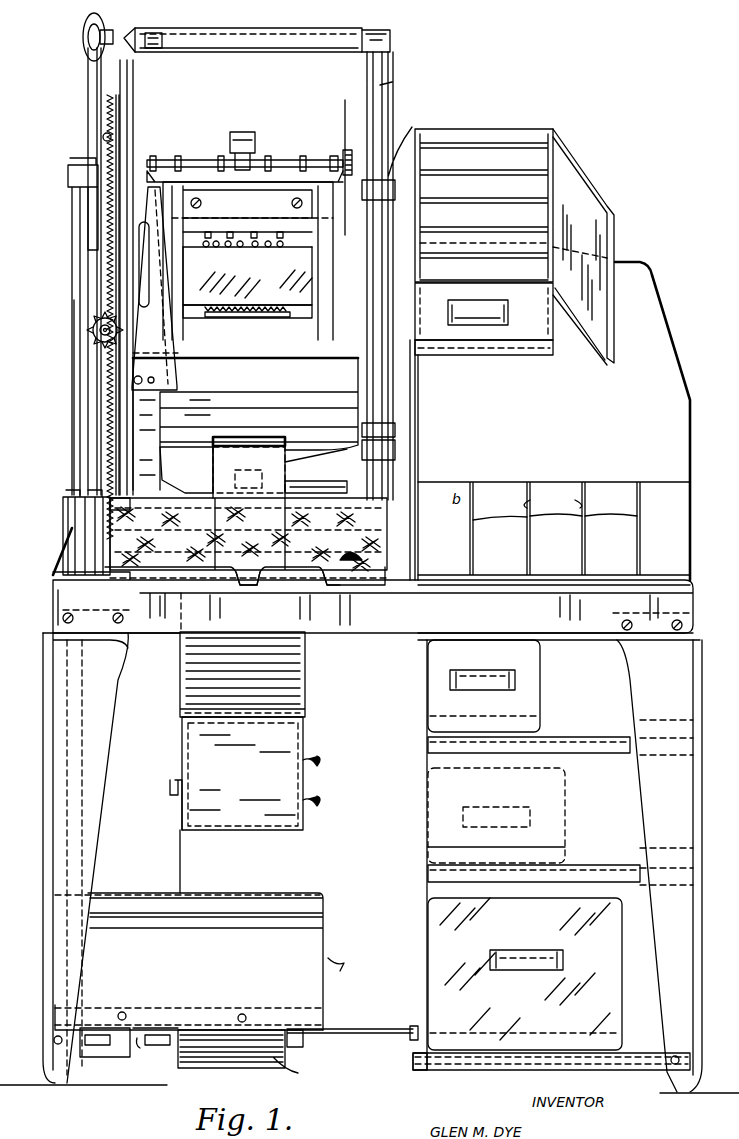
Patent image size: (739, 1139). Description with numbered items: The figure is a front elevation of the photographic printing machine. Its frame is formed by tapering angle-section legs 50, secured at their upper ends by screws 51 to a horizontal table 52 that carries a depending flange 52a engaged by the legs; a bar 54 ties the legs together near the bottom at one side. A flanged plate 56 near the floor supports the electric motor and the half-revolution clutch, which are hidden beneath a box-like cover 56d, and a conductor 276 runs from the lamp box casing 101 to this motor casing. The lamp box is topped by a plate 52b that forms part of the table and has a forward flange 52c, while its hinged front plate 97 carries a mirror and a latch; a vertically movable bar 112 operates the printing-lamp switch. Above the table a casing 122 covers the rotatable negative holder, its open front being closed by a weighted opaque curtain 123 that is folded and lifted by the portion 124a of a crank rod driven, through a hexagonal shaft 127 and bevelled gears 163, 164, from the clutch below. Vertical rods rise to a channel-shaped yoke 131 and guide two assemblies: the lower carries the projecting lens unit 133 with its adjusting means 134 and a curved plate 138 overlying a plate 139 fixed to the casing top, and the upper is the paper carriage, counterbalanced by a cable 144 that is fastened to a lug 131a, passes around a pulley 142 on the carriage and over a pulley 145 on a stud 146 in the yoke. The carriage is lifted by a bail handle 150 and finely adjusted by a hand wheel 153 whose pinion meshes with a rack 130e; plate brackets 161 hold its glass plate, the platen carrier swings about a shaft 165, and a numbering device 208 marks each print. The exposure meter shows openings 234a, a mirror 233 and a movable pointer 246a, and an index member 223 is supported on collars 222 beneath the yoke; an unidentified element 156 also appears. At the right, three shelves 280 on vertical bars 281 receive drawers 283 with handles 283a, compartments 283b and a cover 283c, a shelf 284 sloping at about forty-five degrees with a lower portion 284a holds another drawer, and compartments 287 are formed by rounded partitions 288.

The yoke 131 is at (251, 29).
The lug 131a is at (108, 50).
The pulley 145 is at (101, 27).
The stud 146 is at (84, 43).
The cord or cable 144 is at (96, 86).
The pulley 142 is at (97, 228).
The rack 130e is at (109, 432).
The bevelled gear 164 is at (103, 137).
The bevelled gear 163 is at (72, 168).
The shaft 127 is at (82, 373).
The numbering device 208 is at (249, 133).
The shaft 165 is at (263, 160).
The plate brackets 161 is at (201, 203).
The holes or openings 234a is at (229, 247).
The window 156 is at (232, 290).
The mirror 233 is at (205, 309).
The movable pointer 246a is at (238, 318).
The bail handle 150 is at (140, 263).
The hand wheel 153 is at (90, 319).
The index member 223 is at (408, 364).
The collars 222 is at (396, 441).
The plate 138 is at (240, 436).
The plate 139 is at (212, 462).
The projecting lens unit 133 is at (249, 472).
The adjusting means 134 is at (296, 488).
The curtain 123 is at (153, 500).
The crank rod portion 124a is at (248, 534).
The casing 122 is at (70, 543).
The plate or casting 52b is at (248, 586).
The flange 52c is at (290, 586).
The table 52 is at (695, 592).
The screws 51 is at (63, 611).
The depending flange 52a is at (345, 626).
The legs 50 is at (112, 720).
The front plate 97 is at (290, 670).
The lamp box casing 101 is at (286, 733).
The bar 112 is at (181, 848).
The box-like cover 56d is at (325, 912).
The conductor 276 is at (352, 969).
The plate 56 is at (320, 1018).
The bar or plate 54 is at (366, 1028).
The compartments 283b is at (527, 215).
The cover 283c is at (598, 206).
The shelf portion 284a is at (495, 344).
The shelf 284 is at (560, 335).
The compartments 287 is at (548, 486).
The partitions 288 is at (555, 514).
The vertical bars 281 is at (426, 795).
The drawers 283 is at (530, 672).
The handles 283a is at (460, 692).
The shelves 280 is at (572, 748).